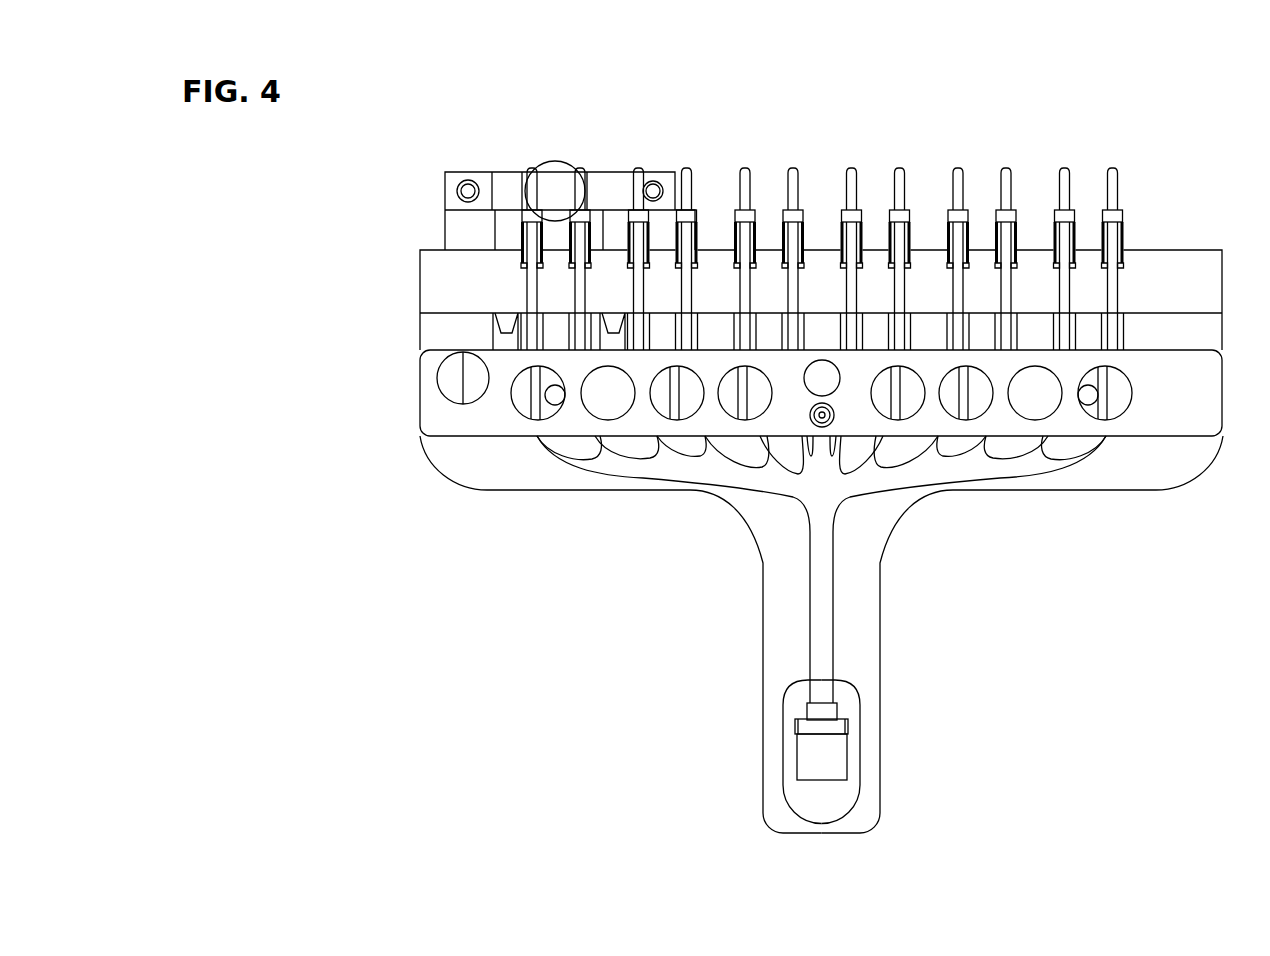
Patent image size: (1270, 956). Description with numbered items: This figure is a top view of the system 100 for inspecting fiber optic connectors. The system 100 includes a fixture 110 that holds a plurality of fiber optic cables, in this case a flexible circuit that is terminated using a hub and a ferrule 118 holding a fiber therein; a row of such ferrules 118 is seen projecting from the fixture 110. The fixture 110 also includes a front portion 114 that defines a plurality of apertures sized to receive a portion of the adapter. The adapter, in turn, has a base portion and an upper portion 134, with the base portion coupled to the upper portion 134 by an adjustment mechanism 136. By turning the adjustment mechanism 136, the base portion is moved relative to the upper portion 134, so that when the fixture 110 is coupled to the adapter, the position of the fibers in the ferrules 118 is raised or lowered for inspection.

The system 100 is at (1060, 125).
The fixture 110 is at (867, 613).
The front portion 114 is at (1178, 283).
The ferrule 118 is at (952, 193).
The upper portion 134 is at (450, 177).
The adjustment mechanism 136 is at (557, 182).